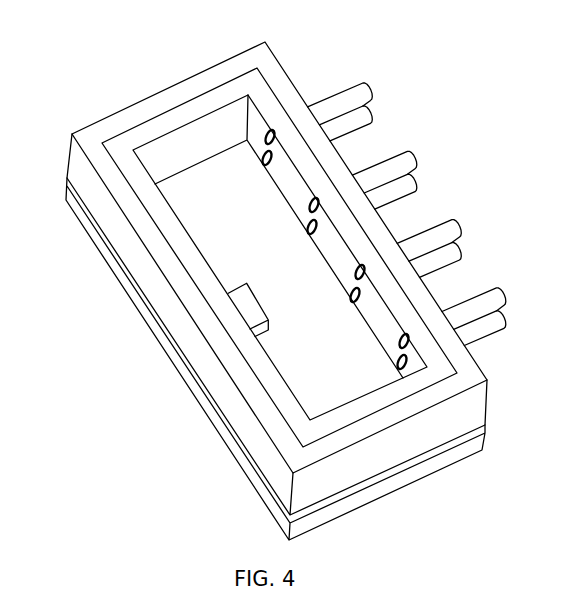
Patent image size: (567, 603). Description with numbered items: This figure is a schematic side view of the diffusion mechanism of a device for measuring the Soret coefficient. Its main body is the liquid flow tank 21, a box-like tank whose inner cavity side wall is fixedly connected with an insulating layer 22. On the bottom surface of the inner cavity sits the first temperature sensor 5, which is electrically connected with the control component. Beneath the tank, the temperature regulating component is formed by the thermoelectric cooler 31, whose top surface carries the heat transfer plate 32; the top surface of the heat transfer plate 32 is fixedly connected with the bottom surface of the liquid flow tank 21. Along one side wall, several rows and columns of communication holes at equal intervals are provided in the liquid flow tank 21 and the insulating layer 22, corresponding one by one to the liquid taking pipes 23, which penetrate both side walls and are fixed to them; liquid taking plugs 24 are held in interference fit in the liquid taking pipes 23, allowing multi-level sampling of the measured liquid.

The liquid flow tank 21 is at (88, 145).
The insulating layer 22 is at (188, 110).
The liquid taking pipes 23 is at (407, 168).
The liquid taking plugs 24 is at (265, 163).
The first temperature sensor 5 is at (247, 307).
The thermoelectric cooler 31 is at (152, 316).
The heat transfer plate 32 is at (352, 378).